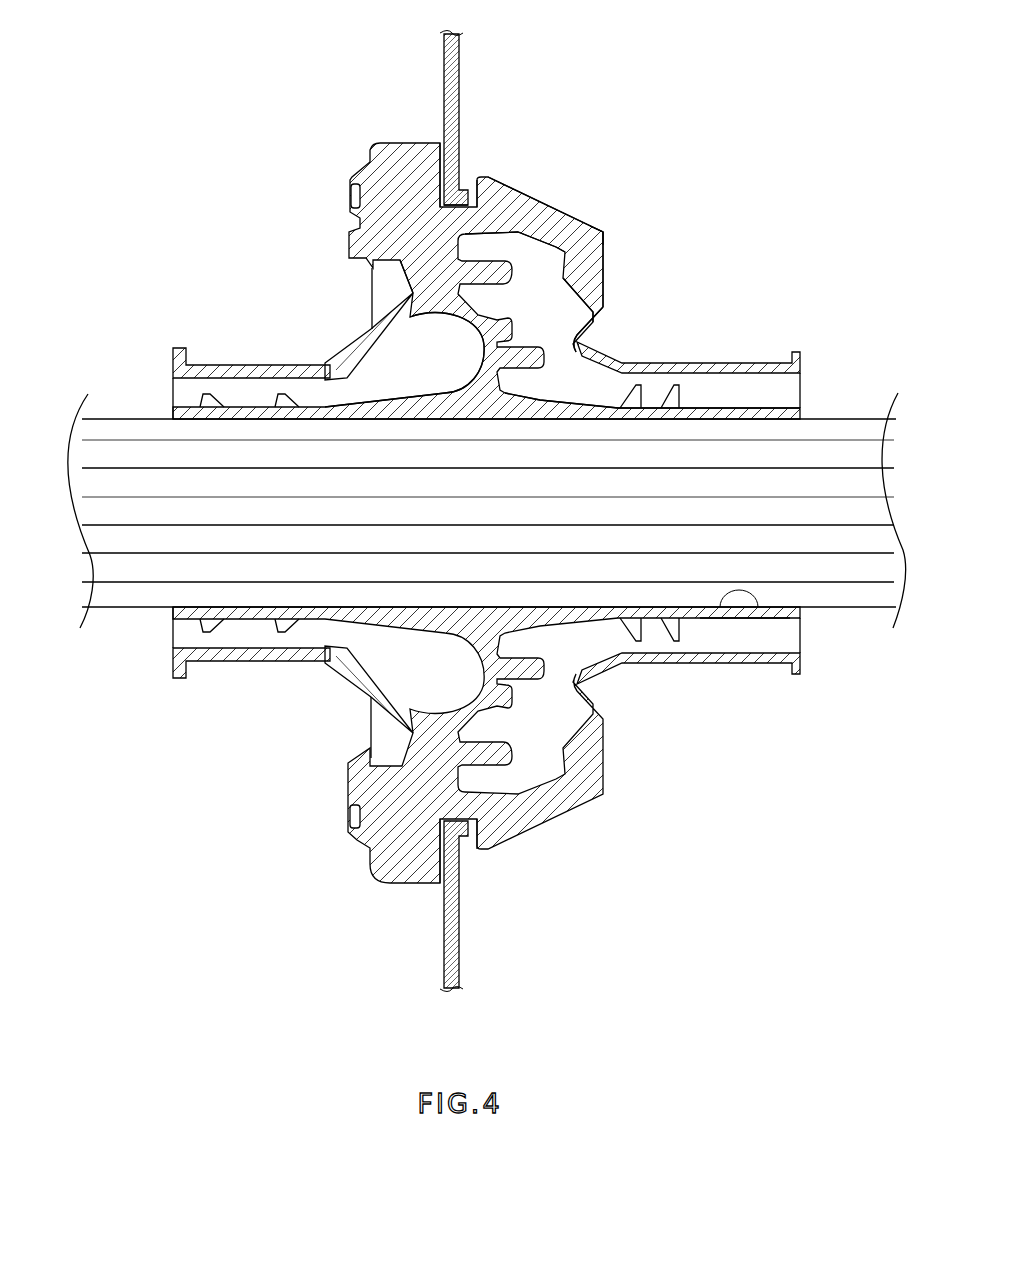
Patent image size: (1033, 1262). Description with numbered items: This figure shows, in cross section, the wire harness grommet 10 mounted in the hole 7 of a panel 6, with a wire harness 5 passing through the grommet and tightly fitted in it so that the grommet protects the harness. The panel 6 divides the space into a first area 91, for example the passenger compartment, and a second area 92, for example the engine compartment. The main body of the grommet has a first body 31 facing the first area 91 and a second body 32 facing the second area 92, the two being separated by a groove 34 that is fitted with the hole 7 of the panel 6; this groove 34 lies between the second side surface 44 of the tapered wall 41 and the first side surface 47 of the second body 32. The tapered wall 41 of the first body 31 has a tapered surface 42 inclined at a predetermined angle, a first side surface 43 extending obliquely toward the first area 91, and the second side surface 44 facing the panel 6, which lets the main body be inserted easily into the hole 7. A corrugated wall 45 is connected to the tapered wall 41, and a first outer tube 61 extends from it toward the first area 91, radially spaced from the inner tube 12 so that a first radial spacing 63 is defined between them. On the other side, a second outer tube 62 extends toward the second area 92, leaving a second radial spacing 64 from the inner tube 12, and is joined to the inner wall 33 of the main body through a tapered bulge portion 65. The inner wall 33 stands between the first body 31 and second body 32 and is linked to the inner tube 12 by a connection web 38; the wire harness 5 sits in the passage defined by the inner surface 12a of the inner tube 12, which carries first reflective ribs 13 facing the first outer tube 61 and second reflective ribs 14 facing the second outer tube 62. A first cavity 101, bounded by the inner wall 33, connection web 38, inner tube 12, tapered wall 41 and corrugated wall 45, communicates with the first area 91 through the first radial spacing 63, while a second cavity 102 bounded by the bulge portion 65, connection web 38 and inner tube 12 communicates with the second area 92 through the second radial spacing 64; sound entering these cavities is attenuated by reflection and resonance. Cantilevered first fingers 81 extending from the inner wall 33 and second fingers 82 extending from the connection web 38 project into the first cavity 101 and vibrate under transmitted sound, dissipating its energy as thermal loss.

The wire harness 5 is at (849, 404).
The panel 6 is at (445, 60).
The hole 7 is at (471, 206).
The wire harness grommet 10 is at (649, 70).
The inner tube 12 is at (745, 406).
The inner surface 12a is at (749, 608).
The first reflective ribs 13 is at (673, 642).
The second reflective ribs 14 is at (287, 636).
The first body 31 is at (589, 128).
The second body 32 is at (400, 133).
The inner wall 33 is at (421, 274).
The groove 34 is at (500, 838).
The connection web 38 is at (472, 352).
The tapered wall 41 is at (564, 208).
The tapered surface 42 is at (535, 200).
The first side surface 43 is at (606, 268).
The second side surface 44 is at (475, 178).
The corrugated wall 45 is at (602, 295).
The first side surface 47 is at (447, 158).
The first outer tube 61 is at (700, 362).
The second outer tube 62 is at (222, 364).
The first radial spacing 63 is at (738, 401).
The second radial spacing 64 is at (262, 401).
The bulge portion 65 is at (368, 333).
The first fingers 81 is at (604, 240).
The second fingers 82 is at (581, 348).
The first area 91 is at (790, 71).
The second area 92 is at (92, 71).
The first cavity 101 is at (552, 311).
The second cavity 102 is at (445, 357).